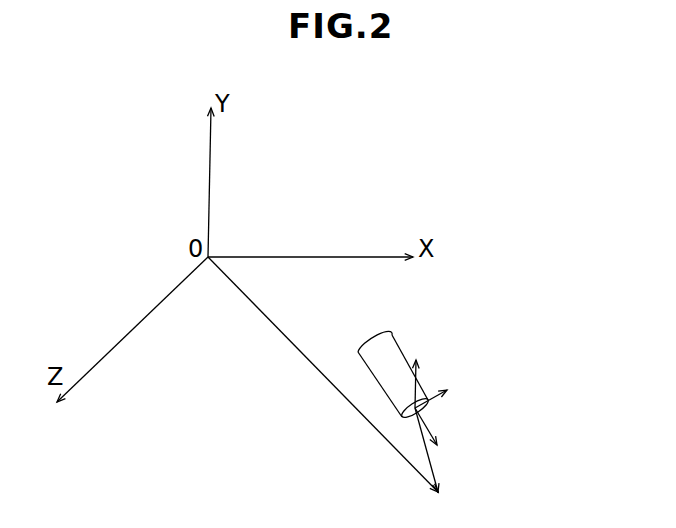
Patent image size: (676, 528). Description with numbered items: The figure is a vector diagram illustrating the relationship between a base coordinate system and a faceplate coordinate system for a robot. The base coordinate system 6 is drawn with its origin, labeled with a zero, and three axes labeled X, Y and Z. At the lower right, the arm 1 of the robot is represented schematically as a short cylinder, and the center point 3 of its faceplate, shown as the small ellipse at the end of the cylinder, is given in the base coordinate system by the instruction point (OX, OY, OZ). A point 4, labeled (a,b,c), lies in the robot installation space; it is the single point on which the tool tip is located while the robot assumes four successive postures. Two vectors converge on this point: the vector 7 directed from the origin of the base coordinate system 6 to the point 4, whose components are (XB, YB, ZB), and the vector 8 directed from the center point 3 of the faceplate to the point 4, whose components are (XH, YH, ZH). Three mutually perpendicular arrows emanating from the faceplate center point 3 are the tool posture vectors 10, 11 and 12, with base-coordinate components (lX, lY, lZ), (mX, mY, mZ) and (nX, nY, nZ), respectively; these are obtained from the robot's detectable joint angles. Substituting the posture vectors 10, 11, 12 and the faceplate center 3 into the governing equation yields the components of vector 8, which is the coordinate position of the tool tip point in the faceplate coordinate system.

The arm of a robot 1 is at (390, 352).
The center point of the faceplate 3 is at (430, 410).
The point in a robot installation space 4 is at (479, 507).
The base coordinate system 6 is at (280, 227).
The vector from the origin of the base coordinate system to the point 7 is at (297, 350).
The vector from the faceplate center point to the point 8 is at (430, 462).
The tool posture vector 10 is at (430, 428).
The tool posture vector 11 is at (428, 393).
The tool posture vector 12 is at (417, 377).